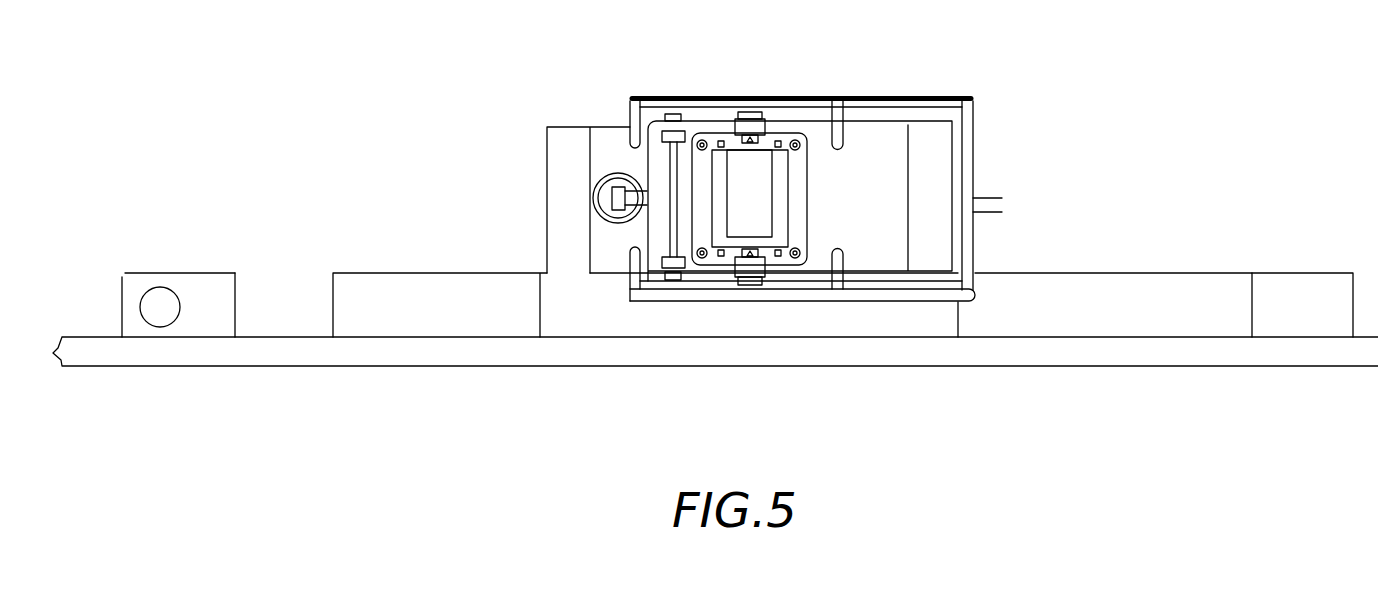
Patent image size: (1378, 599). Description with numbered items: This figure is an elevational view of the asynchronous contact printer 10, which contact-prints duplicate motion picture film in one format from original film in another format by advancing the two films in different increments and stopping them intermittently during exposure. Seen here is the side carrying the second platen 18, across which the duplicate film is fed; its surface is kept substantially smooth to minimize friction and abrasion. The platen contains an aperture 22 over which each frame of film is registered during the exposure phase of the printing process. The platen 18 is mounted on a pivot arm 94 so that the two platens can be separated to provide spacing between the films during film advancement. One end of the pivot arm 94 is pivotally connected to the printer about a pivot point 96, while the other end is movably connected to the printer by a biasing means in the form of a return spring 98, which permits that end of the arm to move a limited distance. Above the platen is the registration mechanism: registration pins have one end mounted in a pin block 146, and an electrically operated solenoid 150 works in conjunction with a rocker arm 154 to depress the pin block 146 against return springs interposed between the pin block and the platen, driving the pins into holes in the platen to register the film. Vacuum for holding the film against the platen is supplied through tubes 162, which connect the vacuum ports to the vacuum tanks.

The asynchronous contact printer 10 is at (308, 143).
The second platen 18 is at (568, 126).
The aperture 22 is at (775, 200).
The pivot arm 94 is at (1103, 273).
The pivot point 96 is at (1300, 273).
The return spring 98 is at (165, 287).
The pin block 146 is at (808, 170).
The solenoid 150 is at (597, 192).
The rocker arm 154 is at (713, 125).
The tubes 162 is at (798, 96).